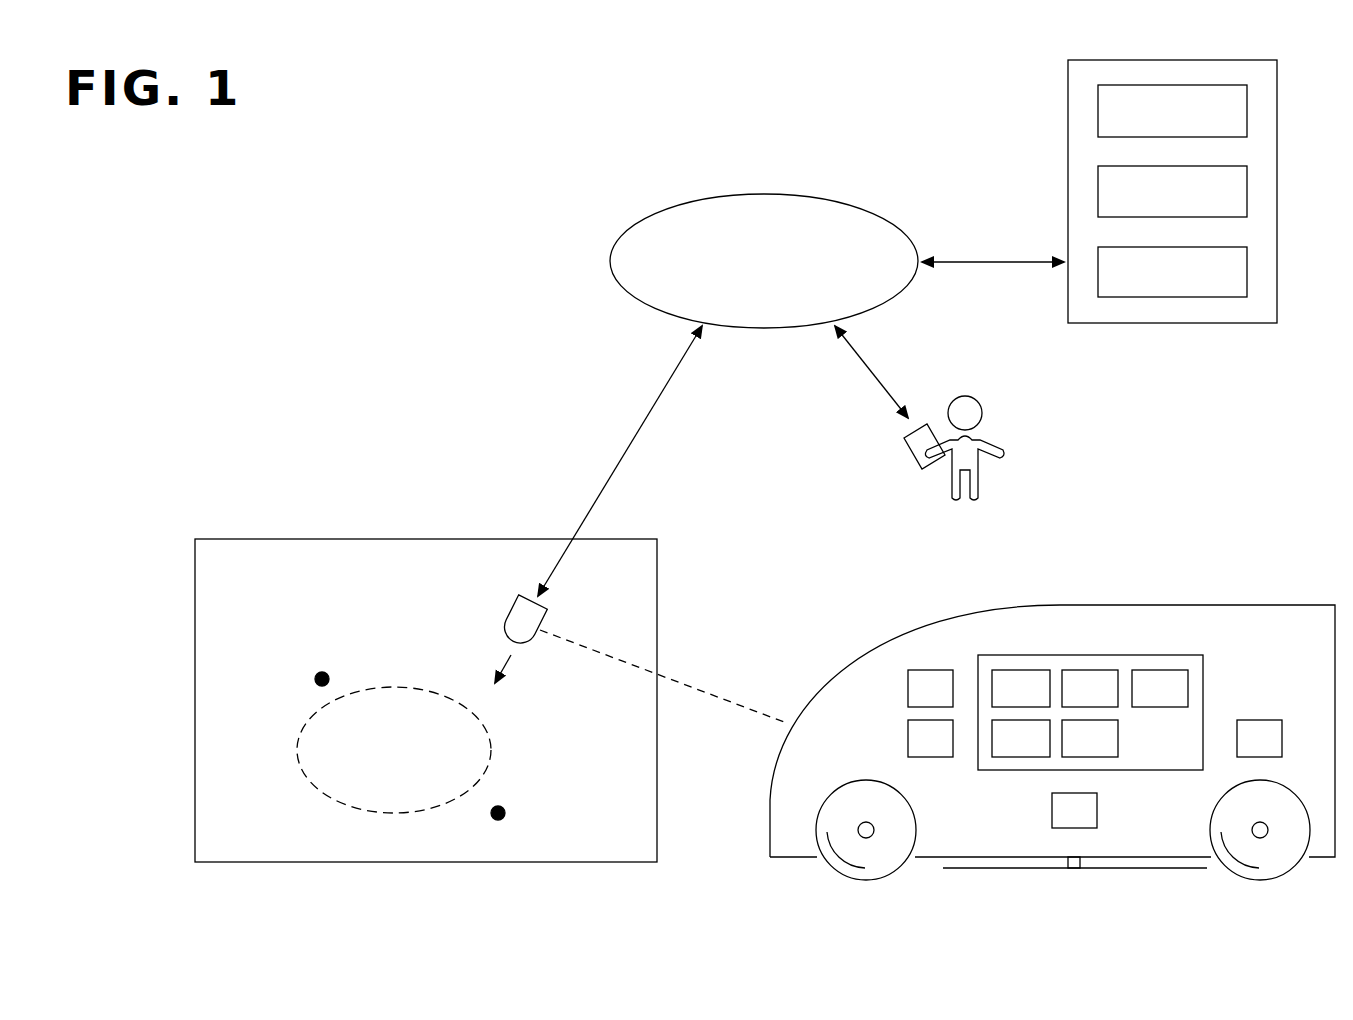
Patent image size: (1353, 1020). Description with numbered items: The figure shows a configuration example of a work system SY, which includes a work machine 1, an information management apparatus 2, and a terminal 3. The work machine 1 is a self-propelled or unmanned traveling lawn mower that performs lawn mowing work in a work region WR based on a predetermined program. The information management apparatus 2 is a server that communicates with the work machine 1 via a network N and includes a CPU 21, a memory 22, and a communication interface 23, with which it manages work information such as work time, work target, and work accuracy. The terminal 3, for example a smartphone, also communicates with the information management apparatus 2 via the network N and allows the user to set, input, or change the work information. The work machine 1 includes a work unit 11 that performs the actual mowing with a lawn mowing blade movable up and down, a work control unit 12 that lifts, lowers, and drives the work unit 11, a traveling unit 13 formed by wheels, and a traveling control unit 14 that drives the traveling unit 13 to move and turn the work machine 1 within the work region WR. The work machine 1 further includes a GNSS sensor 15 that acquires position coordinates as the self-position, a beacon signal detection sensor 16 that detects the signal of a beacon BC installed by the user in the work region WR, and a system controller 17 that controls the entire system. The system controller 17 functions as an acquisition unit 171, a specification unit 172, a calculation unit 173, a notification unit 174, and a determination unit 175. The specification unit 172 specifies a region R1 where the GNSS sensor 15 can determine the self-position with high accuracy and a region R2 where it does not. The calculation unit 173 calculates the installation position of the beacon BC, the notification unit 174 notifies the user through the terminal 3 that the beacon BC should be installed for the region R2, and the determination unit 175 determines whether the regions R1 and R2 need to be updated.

The work machine 1 is at (508, 620).
The information management apparatus 2 is at (1170, 191).
The terminal 3 is at (906, 452).
The work unit 11 is at (1003, 870).
The work control unit 12 is at (1074, 810).
The traveling unit 13 is at (866, 880).
The traveling control unit 14 is at (1259, 738).
The GNSS sensor 15 is at (930, 688).
The beacon signal detection sensor 16 is at (930, 738).
The system controller 17 is at (1090, 657).
The acquisition unit 171 is at (1021, 688).
The specification unit 172 is at (1090, 688).
The calculation unit 173 is at (1160, 688).
The notification unit 174 is at (1021, 738).
The determination unit 175 is at (1090, 738).
The CPU 21 is at (1247, 110).
The memory 22 is at (1247, 190).
The communication interface 23 is at (1247, 270).
The network N is at (764, 193).
The work system SY is at (440, 180).
The work region WR is at (248, 539).
The beacon BC is at (316, 677).
The region R1 is at (245, 838).
The region R2 is at (395, 815).